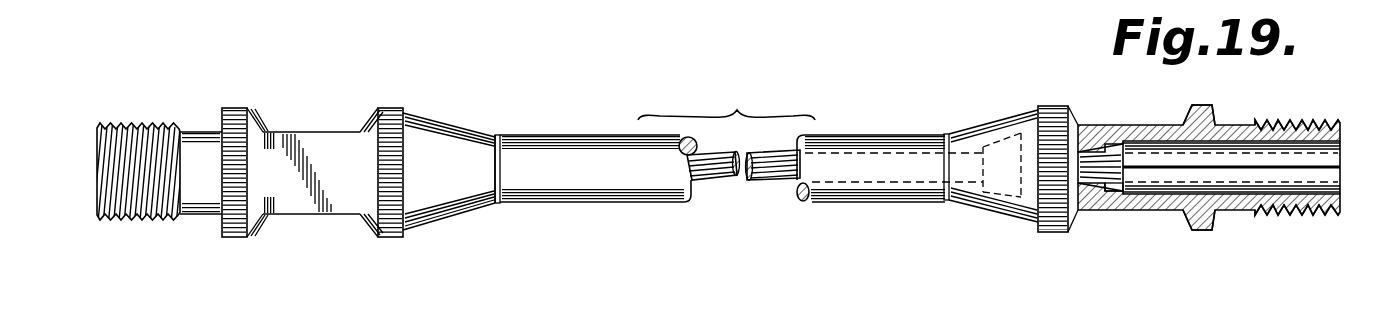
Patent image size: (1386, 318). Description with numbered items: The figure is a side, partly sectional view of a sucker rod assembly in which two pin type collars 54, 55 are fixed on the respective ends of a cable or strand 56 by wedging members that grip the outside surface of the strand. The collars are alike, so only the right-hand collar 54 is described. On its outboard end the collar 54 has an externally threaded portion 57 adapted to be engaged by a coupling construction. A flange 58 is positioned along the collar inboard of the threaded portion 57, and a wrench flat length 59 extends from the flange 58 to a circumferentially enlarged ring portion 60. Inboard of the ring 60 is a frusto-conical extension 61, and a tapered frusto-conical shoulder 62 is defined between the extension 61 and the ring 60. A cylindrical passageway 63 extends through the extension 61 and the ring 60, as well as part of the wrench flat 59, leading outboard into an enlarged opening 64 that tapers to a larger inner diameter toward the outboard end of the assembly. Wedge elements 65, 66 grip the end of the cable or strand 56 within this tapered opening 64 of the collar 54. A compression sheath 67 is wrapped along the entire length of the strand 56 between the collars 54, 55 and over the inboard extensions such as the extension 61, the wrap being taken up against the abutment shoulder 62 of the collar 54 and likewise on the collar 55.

The collar 54 is at (1089, 166).
The collar 55 is at (321, 120).
The cable or strand 56 is at (769, 184).
The externally threaded portion 57 is at (1284, 123).
The flange 58 is at (1207, 232).
The wrench flat length 59 is at (1162, 212).
The ring portion 60 is at (1039, 106).
The frusto-conical extension 61 is at (1003, 142).
The frusto-conical shoulder 62 is at (1013, 220).
The cylindrical passageway 63 is at (1088, 160).
The enlarged opening 64 is at (1119, 195).
The wedge element 65 is at (1336, 158).
The wedge element 66 is at (1336, 177).
The compression sheath 67 is at (619, 197).